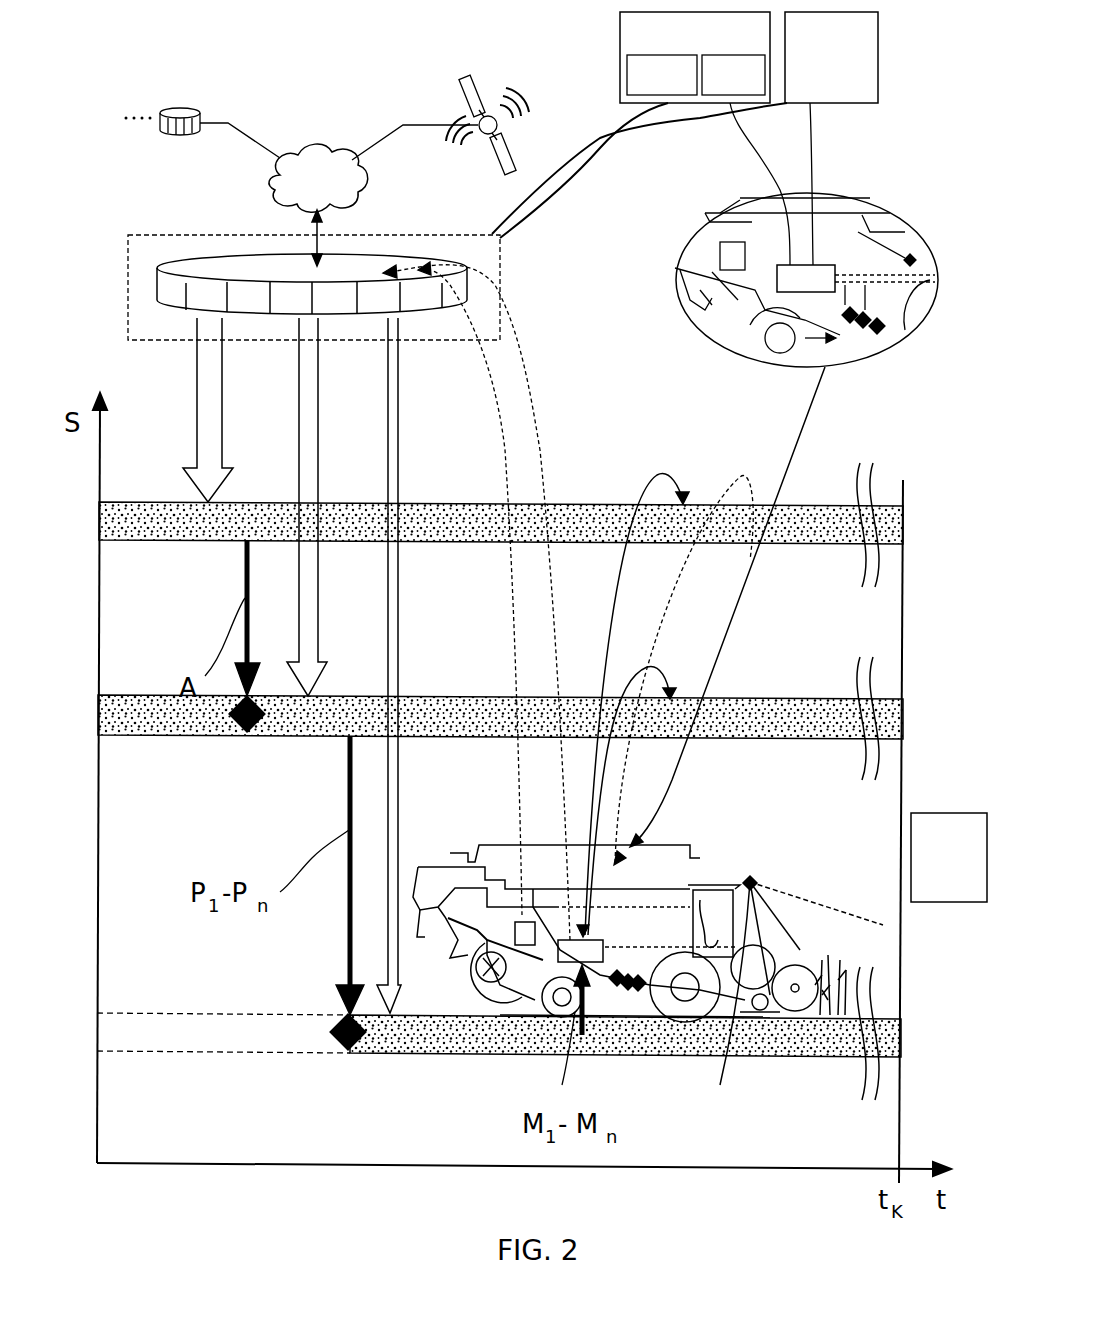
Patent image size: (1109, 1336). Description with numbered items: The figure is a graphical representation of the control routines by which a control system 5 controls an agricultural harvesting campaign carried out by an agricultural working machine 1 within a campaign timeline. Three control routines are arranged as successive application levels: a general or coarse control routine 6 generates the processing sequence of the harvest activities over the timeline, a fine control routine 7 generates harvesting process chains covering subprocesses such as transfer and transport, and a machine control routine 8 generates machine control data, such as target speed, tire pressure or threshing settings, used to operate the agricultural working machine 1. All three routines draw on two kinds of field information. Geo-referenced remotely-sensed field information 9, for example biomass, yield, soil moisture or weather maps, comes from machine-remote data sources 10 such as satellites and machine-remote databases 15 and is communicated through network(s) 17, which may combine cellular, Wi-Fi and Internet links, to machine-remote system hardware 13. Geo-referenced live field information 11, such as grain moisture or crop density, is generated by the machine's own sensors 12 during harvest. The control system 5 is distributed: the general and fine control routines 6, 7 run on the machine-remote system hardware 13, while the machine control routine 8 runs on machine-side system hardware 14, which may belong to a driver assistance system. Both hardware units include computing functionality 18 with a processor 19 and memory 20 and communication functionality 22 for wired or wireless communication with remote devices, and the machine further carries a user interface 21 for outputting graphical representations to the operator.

The agricultural working machine 1 is at (680, 846).
The control system 5 is at (763, 262).
The general control routine 6 is at (203, 524).
The fine control routine 7 is at (278, 736).
The machine control routine 8 is at (392, 1038).
The remotely-sensed field information 9 is at (212, 402).
The data sources 10 is at (432, 97).
The live field information 11 is at (593, 800).
The sensors 12 is at (628, 998).
The machine-remote system hardware 13 is at (483, 238).
The machine-side system hardware 14 is at (835, 265).
The machine-remote databases 15 is at (197, 258).
The network(s) 17 is at (363, 182).
The computing functionality 18 is at (695, 57).
The processor 19 is at (662, 75).
The memory 20 is at (733, 75).
The user interface 21 is at (690, 935).
The communication functionality 22 is at (832, 57).